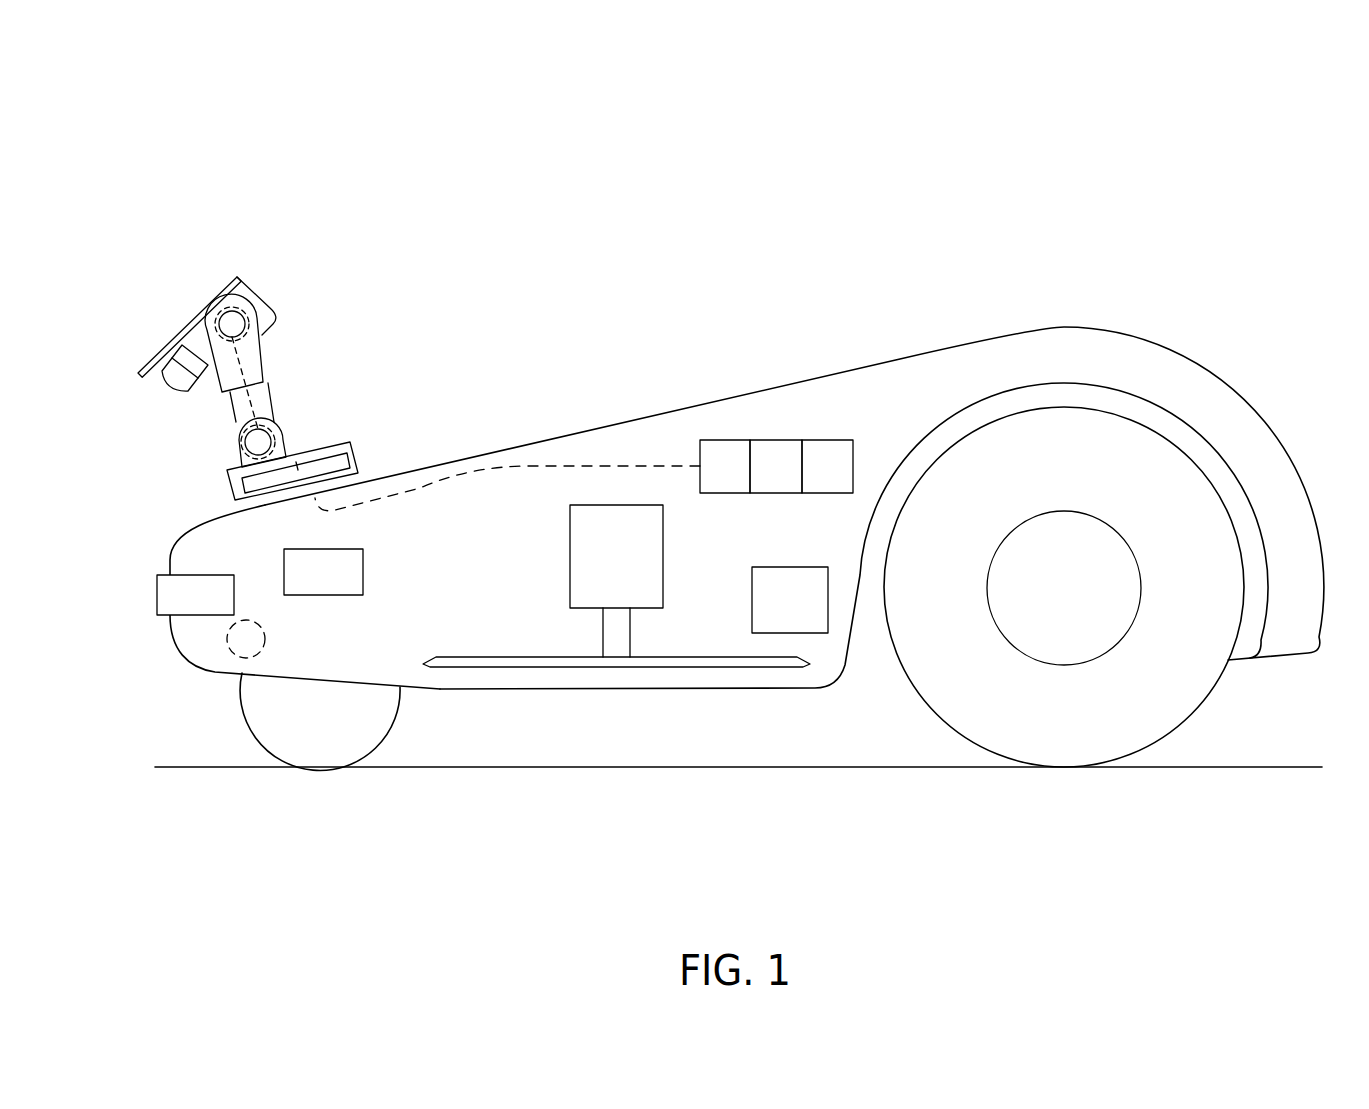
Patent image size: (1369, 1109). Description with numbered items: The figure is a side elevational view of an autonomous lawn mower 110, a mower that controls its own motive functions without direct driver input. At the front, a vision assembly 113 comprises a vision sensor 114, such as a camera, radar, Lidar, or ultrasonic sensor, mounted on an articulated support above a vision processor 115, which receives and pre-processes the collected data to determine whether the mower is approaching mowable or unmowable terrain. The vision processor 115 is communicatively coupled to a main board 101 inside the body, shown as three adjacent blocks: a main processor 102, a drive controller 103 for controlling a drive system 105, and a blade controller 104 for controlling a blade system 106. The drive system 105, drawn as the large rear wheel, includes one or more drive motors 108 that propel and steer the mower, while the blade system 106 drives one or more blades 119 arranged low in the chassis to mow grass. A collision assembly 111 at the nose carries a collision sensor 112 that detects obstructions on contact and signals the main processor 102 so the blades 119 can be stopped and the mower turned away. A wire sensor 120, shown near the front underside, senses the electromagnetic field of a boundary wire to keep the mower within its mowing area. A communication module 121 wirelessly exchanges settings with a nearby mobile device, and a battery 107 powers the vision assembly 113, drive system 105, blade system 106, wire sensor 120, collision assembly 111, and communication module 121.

The main board 101 is at (832, 418).
The main processor 102 is at (725, 494).
The drive controller 103 is at (773, 494).
The blade controller 104 is at (827, 494).
The drive system 105 is at (1250, 692).
The blade system 106 is at (530, 535).
The battery 107 is at (752, 600).
The drive motor 108 is at (1064, 510).
The lawn mower 110 is at (203, 141).
The collision assembly 111 is at (128, 585).
The collision sensor 112 is at (172, 608).
The vision assembly 113 is at (183, 270).
The vision sensor 114 is at (170, 393).
The vision processor 115 is at (233, 487).
The blade 119 is at (475, 657).
The wire sensor 120 is at (265, 641).
The communication module 121 is at (300, 586).